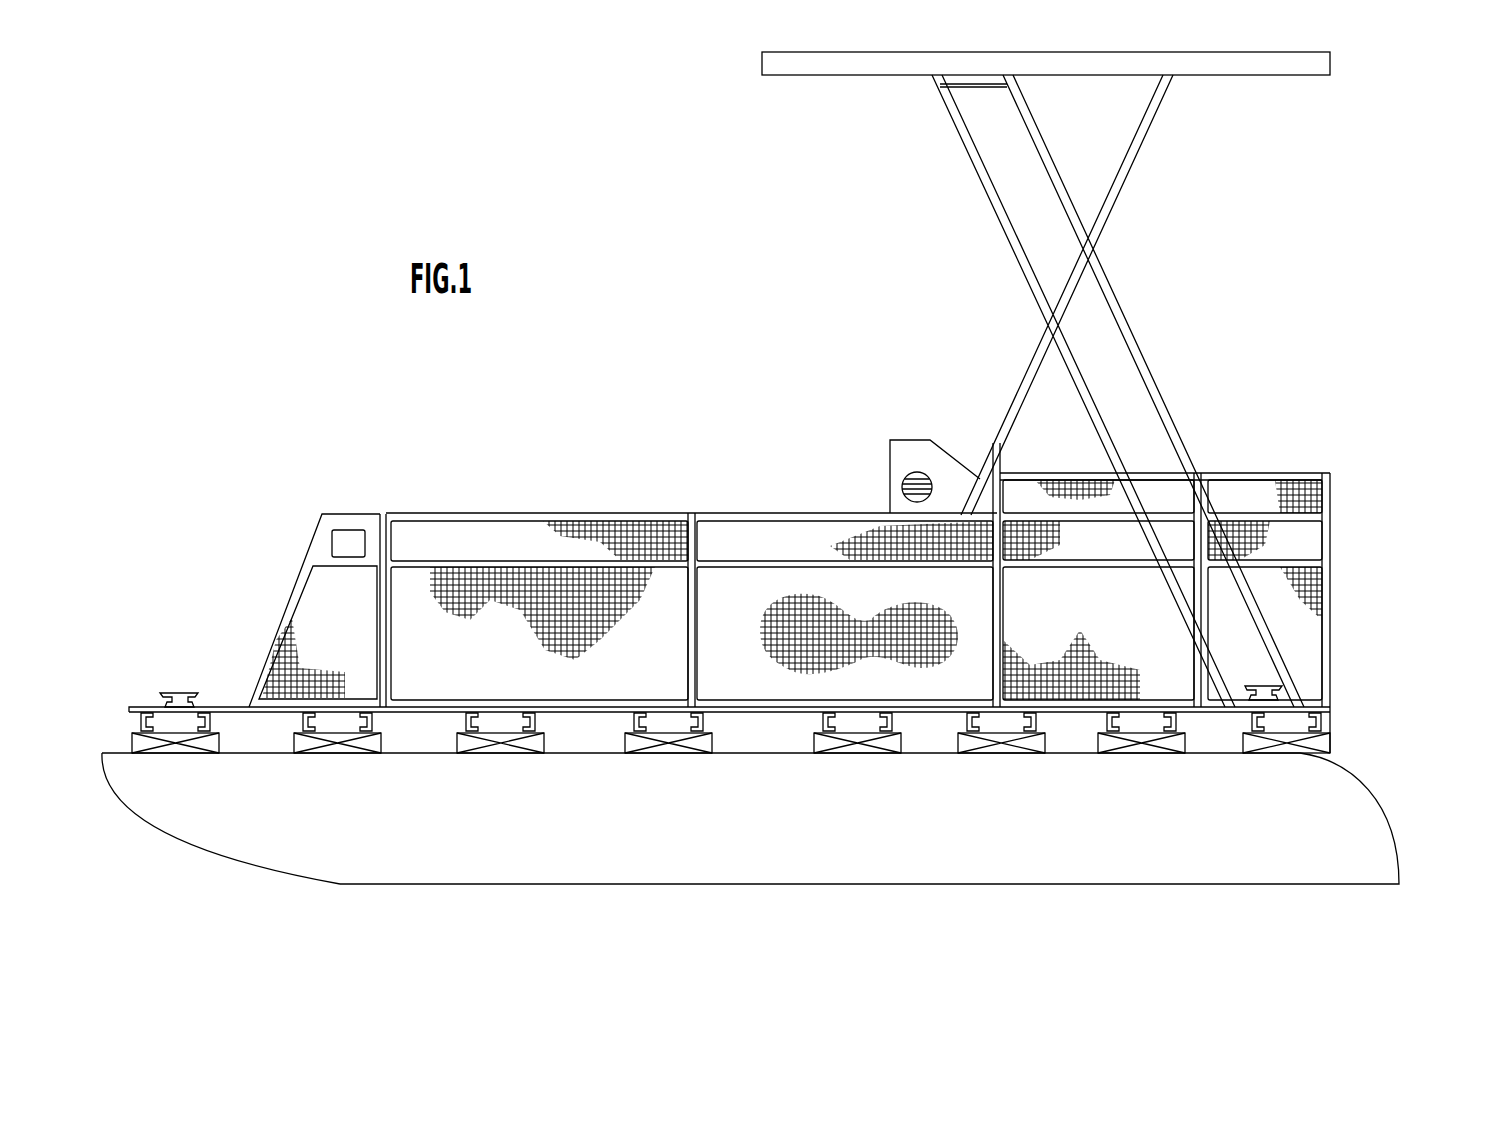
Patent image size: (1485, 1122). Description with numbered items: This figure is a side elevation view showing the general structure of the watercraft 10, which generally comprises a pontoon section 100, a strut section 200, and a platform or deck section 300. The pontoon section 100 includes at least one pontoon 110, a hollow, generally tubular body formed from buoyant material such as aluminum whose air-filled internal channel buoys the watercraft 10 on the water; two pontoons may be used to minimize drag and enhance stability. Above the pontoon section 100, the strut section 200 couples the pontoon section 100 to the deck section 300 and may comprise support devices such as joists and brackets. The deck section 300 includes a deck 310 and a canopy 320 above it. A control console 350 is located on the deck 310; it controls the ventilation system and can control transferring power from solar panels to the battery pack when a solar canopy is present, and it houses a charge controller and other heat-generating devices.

The watercraft 10 is at (604, 200).
The pontoon section 100 is at (1410, 808).
The pontoon 110 is at (222, 828).
The strut section 200 is at (1357, 732).
The deck section 300 is at (1357, 613).
The deck 310 is at (236, 705).
The canopy 320 is at (762, 63).
The control console 350 is at (876, 479).